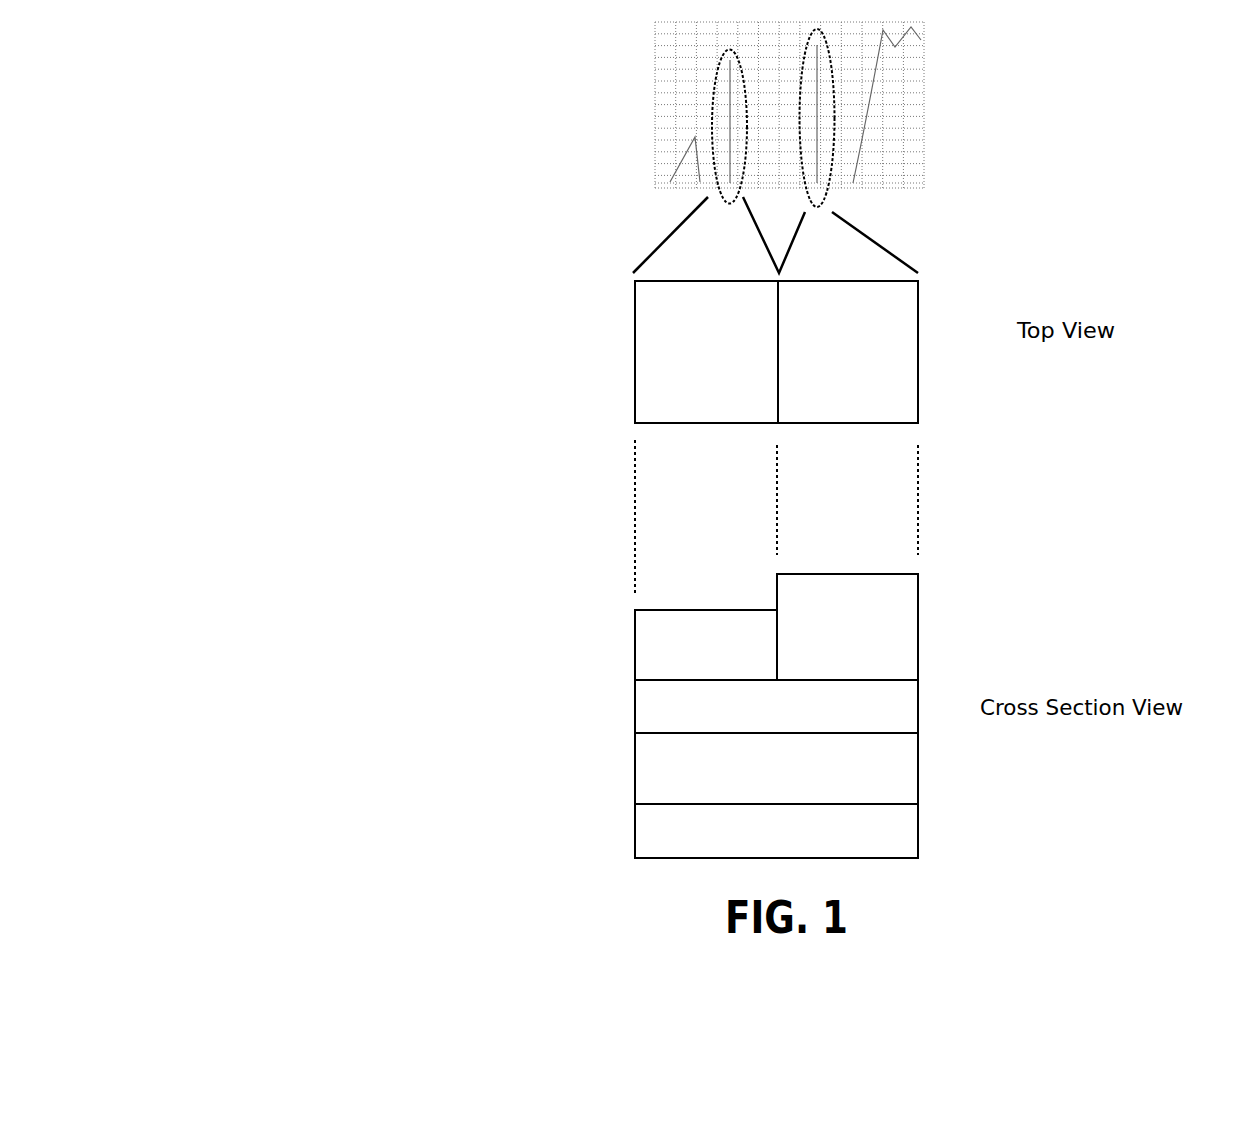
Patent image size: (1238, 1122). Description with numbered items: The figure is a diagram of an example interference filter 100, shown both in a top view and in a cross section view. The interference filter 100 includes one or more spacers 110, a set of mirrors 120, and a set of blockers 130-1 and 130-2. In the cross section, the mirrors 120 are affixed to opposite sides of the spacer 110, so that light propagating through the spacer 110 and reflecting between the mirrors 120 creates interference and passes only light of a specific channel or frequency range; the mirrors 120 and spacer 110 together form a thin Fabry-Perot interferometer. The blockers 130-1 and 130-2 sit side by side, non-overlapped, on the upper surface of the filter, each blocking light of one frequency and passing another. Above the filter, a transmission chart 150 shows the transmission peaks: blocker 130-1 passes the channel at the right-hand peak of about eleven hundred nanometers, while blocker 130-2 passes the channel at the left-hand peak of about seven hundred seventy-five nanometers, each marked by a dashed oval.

The interference filter 100 is at (283, 59).
The spacer 110 is at (758, 794).
The mirror 120 is at (830, 717).
The blocker 130-1 is at (878, 378).
The blocker 130-2 is at (677, 378).
The transmission chart 150 is at (923, 116).